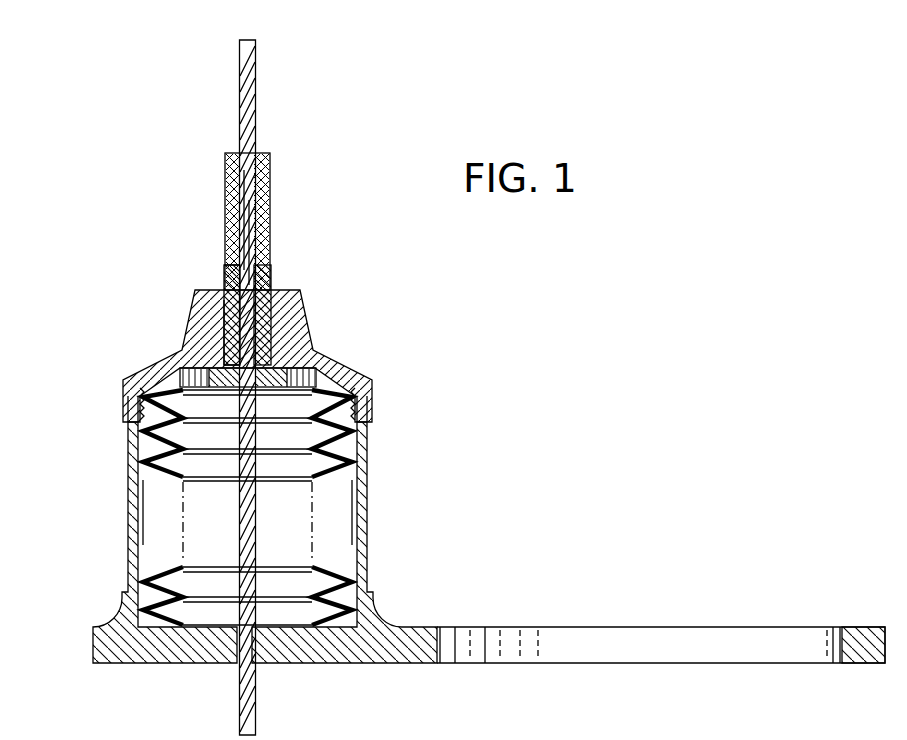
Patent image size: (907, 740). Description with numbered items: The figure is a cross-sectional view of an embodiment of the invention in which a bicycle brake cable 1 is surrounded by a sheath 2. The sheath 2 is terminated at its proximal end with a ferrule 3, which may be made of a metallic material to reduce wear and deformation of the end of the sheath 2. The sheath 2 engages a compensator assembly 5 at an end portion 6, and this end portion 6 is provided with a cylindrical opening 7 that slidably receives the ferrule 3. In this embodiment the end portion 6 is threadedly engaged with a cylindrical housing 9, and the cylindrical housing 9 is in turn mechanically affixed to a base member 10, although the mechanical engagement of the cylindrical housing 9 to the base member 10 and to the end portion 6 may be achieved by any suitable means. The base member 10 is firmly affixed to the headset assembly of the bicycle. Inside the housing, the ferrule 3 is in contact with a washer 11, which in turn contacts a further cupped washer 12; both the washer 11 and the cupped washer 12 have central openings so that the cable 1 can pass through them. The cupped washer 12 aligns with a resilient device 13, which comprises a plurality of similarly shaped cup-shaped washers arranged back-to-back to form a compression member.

The bicycle brake cable 1 is at (257, 103).
The sheath 2 is at (268, 194).
The ferrule 3 is at (270, 290).
The compensator assembly 5 is at (376, 508).
The end portion 6 is at (305, 320).
The cylindrical opening 7 is at (236, 326).
The cylindrical housing 9 is at (370, 456).
The base member 10 is at (393, 632).
The washer 11 is at (322, 378).
The cupped washer 12 is at (136, 412).
The resilient device 13 is at (163, 475).